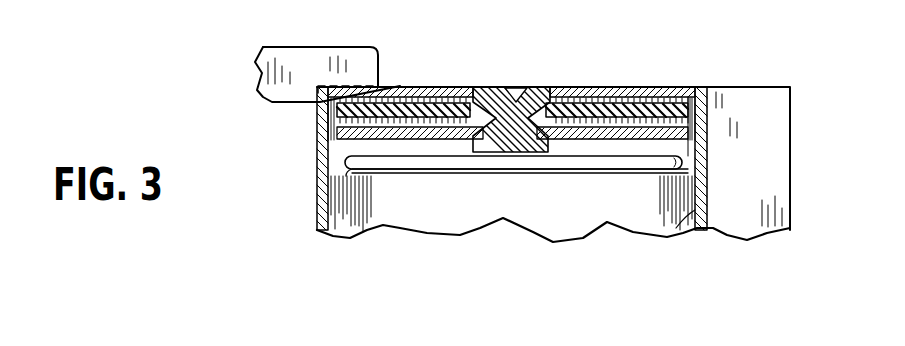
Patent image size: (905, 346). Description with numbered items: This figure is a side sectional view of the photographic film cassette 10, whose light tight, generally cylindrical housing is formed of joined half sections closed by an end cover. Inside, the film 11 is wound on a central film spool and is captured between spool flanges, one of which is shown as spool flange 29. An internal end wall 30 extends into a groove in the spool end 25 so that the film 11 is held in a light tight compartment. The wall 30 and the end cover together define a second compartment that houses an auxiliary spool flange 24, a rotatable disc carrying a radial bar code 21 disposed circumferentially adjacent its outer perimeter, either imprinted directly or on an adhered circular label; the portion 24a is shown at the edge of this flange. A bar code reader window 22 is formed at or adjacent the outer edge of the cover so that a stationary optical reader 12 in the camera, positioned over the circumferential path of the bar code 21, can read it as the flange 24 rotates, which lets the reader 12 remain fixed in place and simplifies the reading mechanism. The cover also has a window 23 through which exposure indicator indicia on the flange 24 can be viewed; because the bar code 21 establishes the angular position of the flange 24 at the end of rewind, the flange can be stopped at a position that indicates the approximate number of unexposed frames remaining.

The cassette 10 is at (307, 203).
The film 11 is at (690, 228).
The optical reader 12 is at (320, 101).
The radial bar code 21 is at (320, 137).
The bar code reader window 22 is at (398, 87).
The window 23 is at (430, 100).
The auxiliary spool flange 24 is at (628, 87).
The electrode end portion 24a is at (678, 87).
The spool end 25 is at (549, 87).
The spool flange 29 is at (707, 172).
The internal end wall 30 is at (380, 142).